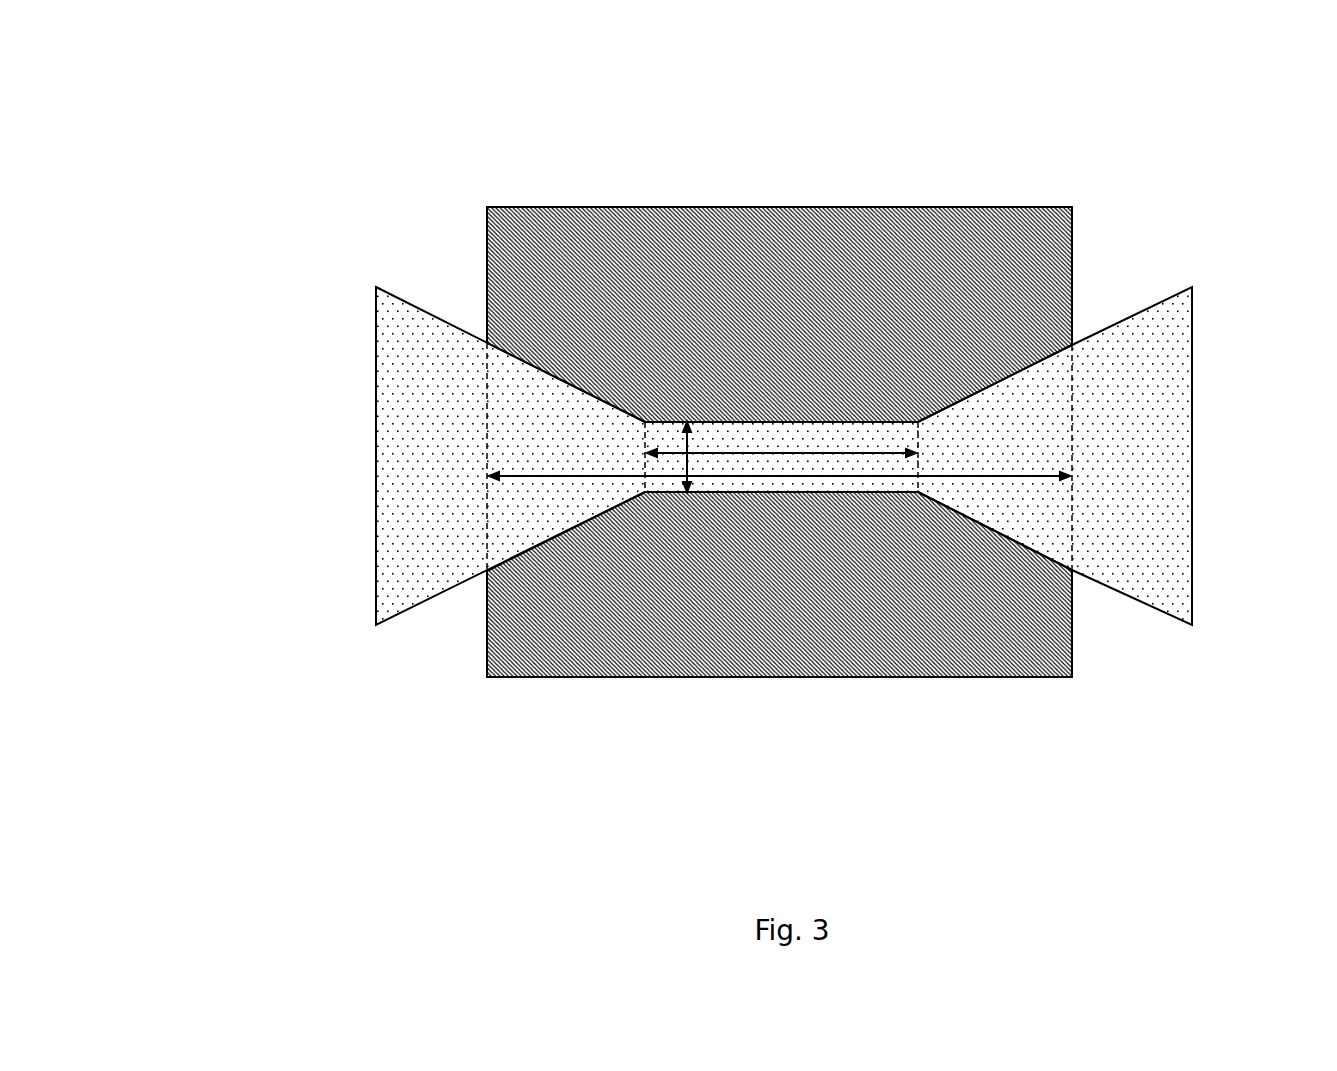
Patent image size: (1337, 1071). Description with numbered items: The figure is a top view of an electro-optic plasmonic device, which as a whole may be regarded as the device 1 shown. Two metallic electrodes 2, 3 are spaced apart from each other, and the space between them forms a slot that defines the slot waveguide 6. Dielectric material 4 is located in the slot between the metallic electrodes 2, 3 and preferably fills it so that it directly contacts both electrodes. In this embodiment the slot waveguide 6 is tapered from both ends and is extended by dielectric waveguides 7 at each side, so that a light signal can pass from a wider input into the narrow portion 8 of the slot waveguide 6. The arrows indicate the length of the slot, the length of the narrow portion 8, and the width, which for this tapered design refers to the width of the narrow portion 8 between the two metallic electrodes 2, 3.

The sensor device 1 is at (751, 400).
The metallic electrode 2 is at (531, 235).
The metallic electrode 3 is at (552, 634).
The dielectric material 4 is at (472, 463).
The slot waveguide 6 is at (1030, 433).
The dielectric waveguides 7 is at (397, 504).
The narrow portion 8 is at (867, 470).